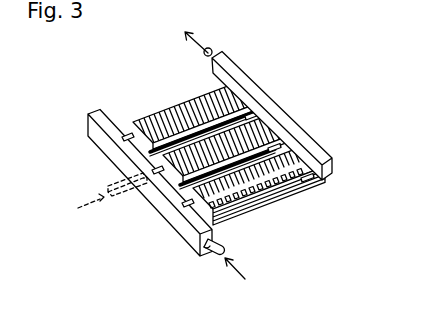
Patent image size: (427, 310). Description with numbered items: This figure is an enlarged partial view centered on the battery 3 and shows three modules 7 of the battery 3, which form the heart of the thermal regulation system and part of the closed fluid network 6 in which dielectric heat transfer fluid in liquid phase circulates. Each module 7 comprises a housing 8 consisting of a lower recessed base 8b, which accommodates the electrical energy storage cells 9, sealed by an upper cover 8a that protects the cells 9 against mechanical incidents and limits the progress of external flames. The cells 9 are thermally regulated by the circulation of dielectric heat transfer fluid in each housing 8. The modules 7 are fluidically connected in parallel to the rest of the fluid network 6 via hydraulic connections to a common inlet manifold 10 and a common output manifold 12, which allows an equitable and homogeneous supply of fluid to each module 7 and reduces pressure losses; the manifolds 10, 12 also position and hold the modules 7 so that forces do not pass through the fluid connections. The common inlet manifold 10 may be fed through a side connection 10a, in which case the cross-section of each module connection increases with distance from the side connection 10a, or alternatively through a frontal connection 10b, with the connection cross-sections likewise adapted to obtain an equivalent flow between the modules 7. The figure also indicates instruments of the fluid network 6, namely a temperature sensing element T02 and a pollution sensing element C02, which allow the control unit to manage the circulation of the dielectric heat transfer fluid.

The battery 3 is at (322, 93).
The fluid network 6 is at (97, 147).
The module 7 is at (138, 84).
The housing 8 is at (134, 112).
The upper cover 8a is at (261, 127).
The lower recessed base 8b is at (297, 194).
The electrical energy storage cells 9 is at (275, 195).
The common inlet manifold 10 is at (180, 222).
The side connection 10a is at (212, 257).
The frontal connection 10b is at (128, 200).
The common output manifold 12 is at (311, 147).
The temperature sensing element T02 is at (200, 108).
The pollution sensing element C02 is at (224, 100).